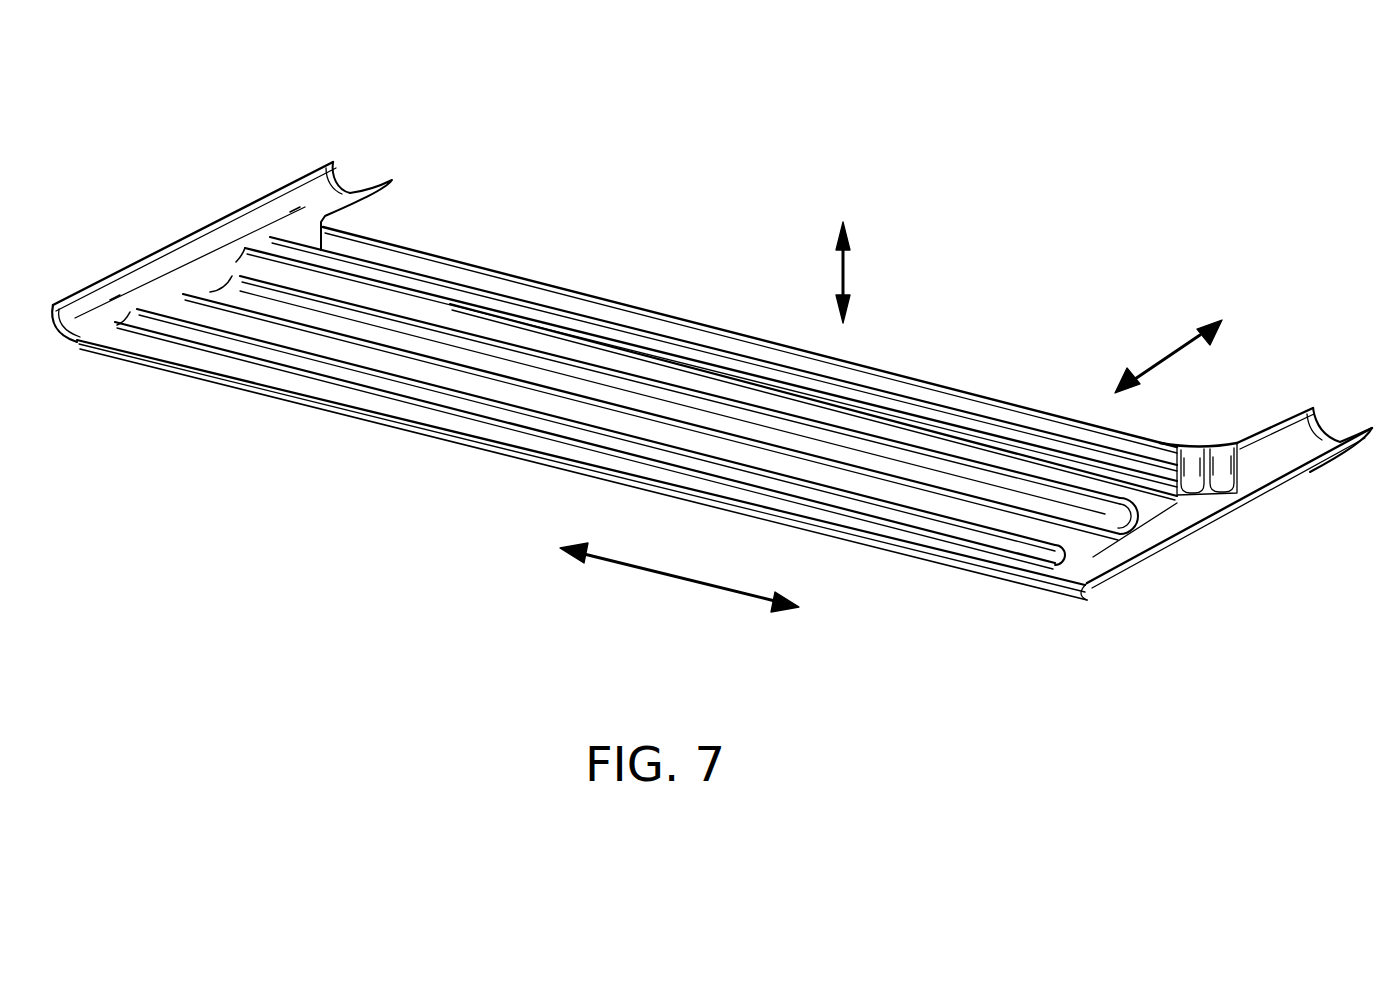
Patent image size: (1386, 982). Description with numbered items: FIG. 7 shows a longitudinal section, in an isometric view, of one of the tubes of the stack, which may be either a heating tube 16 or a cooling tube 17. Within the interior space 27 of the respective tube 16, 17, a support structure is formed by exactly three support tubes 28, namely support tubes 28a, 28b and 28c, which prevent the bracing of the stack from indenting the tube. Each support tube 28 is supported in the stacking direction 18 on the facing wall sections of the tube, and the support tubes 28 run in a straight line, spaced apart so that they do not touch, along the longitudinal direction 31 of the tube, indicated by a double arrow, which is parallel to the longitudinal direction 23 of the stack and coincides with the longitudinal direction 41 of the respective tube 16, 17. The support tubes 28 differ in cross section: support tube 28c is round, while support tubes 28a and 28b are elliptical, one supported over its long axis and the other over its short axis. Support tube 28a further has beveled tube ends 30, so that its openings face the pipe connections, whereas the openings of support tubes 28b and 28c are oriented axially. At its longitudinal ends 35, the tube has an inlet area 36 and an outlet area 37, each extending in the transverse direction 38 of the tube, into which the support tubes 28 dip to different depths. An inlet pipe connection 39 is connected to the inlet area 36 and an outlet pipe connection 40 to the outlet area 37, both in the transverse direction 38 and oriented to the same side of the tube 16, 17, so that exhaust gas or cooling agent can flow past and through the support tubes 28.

The heating tube 16 is at (703, 375).
The cooling tube 17 is at (703, 375).
The stacking direction 18 is at (850, 272).
The longitudinal direction of the stack 23 is at (648, 578).
The interior space 27 is at (350, 403).
The support tube 28 is at (646, 439).
The support tube 28a is at (500, 297).
The support tube 28b is at (600, 367).
The support tube 28c is at (630, 455).
The tube end 30 is at (133, 320).
The longitudinal direction of the tube 31 is at (648, 578).
The longitudinal end 35 is at (232, 215).
The inlet area 36 is at (190, 243).
The outlet area 37 is at (1180, 507).
The transverse direction of the tube 38 is at (1168, 362).
The inlet pipe connection 39 is at (305, 168).
The outlet pipe connection 40 is at (1280, 423).
The longitudinal direction of the respective tube 41 is at (670, 582).